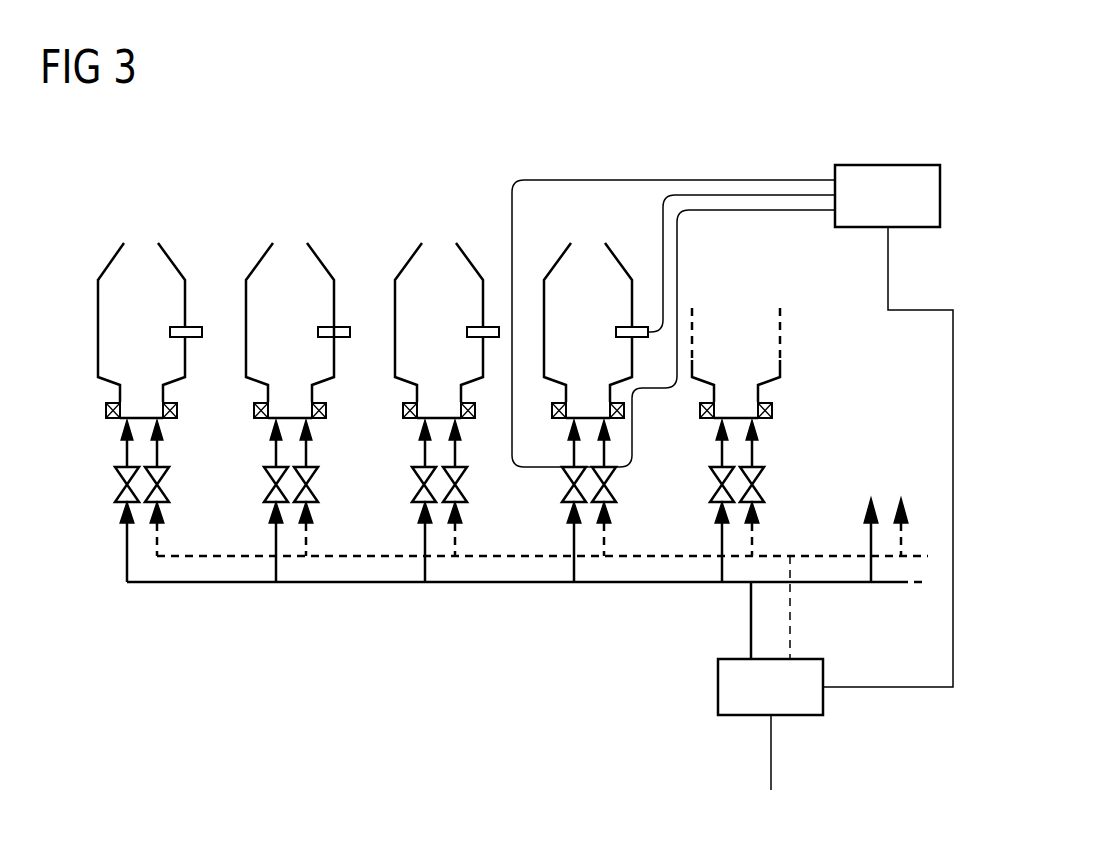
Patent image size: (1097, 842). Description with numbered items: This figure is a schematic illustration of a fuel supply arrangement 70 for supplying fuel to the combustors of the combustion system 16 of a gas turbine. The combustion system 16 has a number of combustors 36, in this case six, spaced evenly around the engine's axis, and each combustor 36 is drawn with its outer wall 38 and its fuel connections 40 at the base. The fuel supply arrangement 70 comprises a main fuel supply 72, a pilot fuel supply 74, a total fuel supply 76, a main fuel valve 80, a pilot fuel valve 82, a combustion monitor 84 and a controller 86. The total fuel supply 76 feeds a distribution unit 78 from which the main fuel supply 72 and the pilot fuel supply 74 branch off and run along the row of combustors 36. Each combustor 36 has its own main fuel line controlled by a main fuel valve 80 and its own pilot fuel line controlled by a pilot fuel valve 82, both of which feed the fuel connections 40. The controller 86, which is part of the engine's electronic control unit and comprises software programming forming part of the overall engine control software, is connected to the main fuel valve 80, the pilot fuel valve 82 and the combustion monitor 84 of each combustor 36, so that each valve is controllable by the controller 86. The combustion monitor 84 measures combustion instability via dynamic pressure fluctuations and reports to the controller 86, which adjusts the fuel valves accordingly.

The combustion system 16 is at (118, 196).
The combustor 36 is at (90, 270).
The burner wall 38 is at (108, 338).
The burner nozzle connection 40 is at (106, 410).
The fuel supply arrangement 70 is at (330, 675).
The main fuel supply 72 is at (750, 618).
The pilot fuel supply 74 is at (791, 618).
The total fuel supply 76 is at (772, 753).
The fuel distribution unit 78 is at (717, 687).
The main fuel valve 80 is at (117, 492).
The pilot fuel valve 82 is at (166, 497).
The combustion monitor 84 is at (193, 327).
The controller 86 is at (887, 164).